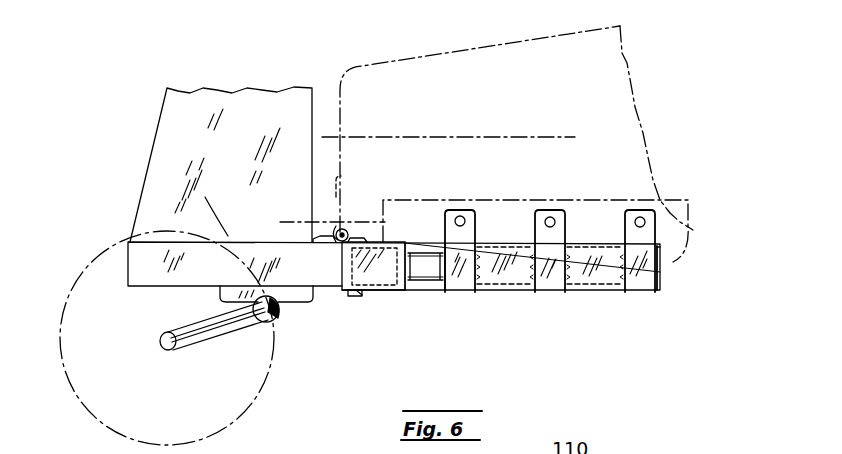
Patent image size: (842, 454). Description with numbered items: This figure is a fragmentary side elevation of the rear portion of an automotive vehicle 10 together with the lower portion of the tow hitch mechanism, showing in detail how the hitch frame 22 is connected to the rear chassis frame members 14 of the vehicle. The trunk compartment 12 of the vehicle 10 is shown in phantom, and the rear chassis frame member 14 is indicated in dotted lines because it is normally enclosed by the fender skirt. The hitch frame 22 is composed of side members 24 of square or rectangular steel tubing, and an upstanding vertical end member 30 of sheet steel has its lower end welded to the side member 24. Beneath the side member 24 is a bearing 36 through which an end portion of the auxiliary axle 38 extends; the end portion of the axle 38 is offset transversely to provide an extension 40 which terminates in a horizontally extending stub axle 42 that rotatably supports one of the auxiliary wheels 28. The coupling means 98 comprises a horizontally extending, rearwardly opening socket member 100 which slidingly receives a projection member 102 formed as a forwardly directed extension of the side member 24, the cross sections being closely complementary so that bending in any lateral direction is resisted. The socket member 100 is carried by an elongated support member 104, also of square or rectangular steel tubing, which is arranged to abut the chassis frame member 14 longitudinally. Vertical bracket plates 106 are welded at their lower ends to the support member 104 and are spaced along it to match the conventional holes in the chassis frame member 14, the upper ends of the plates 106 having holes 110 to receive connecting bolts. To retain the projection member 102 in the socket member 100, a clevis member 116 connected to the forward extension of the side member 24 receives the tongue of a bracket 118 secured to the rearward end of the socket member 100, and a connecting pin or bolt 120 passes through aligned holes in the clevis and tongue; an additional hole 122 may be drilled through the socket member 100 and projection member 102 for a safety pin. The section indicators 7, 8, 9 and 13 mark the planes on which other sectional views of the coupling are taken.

The automotive vehicle 10 is at (636, 101).
The trunk compartment 12 is at (472, 48).
The rear chassis frame members 14 is at (600, 206).
The section line 9 is at (327, 158).
The section line 13 is at (287, 240).
The section line 7 is at (524, 192).
The section line 8 is at (576, 180).
The vertical end members 30 is at (160, 154).
The hitch frame 22 is at (226, 230).
The side members 24 is at (146, 280).
The auxiliary wheels 28 is at (108, 426).
The bearings 36 is at (292, 293).
The auxiliary axle 38 is at (278, 321).
The extensions 40 is at (196, 340).
The stub axles 42 is at (163, 350).
The clevis member 116 is at (330, 235).
The bracket 118 is at (358, 230).
The connecting pin or bolt 120 is at (344, 228).
The holes 110 is at (461, 219).
The socket members 100 is at (345, 294).
The projection members 102 is at (388, 292).
The additional hole 122 is at (357, 295).
The coupling means 98 is at (419, 292).
The vertical plates 106 is at (457, 289).
The elongated support members 104 is at (612, 285).